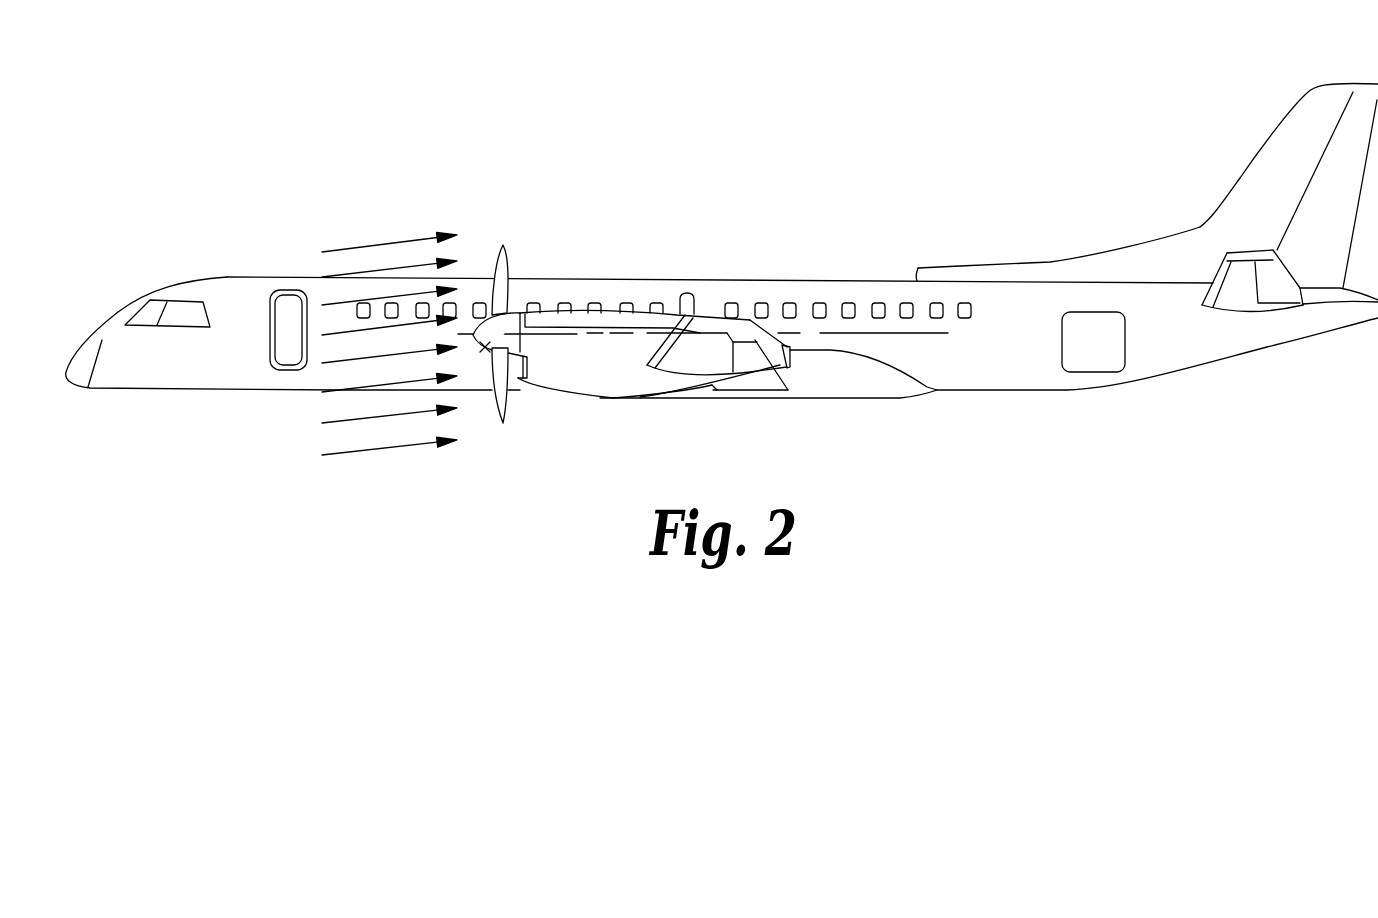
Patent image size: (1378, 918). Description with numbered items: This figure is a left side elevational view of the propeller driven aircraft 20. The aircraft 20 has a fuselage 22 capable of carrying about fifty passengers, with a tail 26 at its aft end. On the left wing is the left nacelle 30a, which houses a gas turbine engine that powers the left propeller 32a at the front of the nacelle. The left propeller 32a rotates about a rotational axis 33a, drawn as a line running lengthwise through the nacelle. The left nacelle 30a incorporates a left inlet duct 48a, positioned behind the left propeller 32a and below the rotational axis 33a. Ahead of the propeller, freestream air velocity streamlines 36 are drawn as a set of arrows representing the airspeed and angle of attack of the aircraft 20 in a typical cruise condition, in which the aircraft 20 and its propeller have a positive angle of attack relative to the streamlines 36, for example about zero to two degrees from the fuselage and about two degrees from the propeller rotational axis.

The aircraft 20 is at (722, 291).
The fuselage 22 is at (798, 278).
The tail 26 is at (1205, 337).
The left nacelle 30a is at (631, 401).
The left propeller 32a is at (488, 342).
The rotational axis 33a is at (577, 335).
The freestream air velocity streamlines 36 is at (387, 243).
The left inlet duct 48a is at (523, 380).